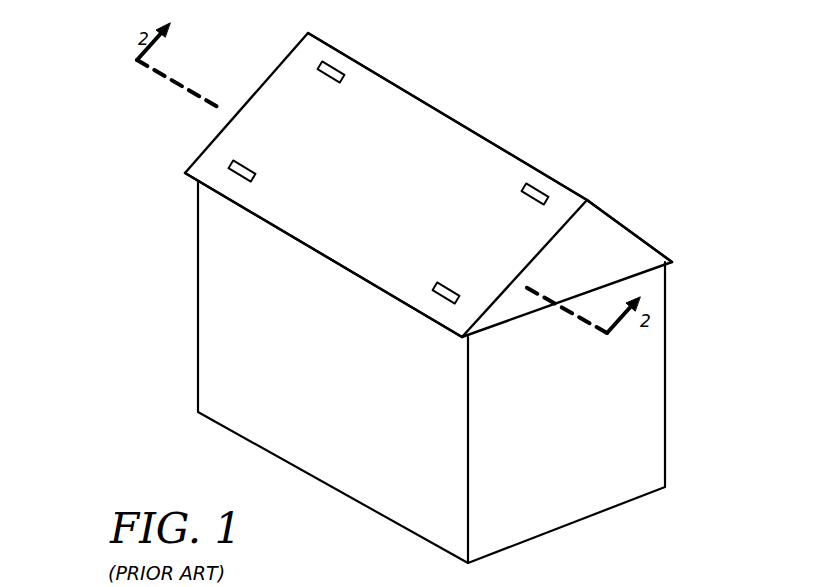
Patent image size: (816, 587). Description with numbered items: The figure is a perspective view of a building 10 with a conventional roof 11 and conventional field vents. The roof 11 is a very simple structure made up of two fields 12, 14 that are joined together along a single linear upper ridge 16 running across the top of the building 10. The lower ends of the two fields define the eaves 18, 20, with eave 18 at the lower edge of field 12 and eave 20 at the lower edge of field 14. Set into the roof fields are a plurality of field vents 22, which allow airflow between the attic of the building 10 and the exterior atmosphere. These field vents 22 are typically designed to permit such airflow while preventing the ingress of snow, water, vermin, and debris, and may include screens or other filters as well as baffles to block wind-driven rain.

The building 10 is at (118, 235).
The roof 11 is at (445, 181).
The field 12 is at (398, 170).
The field 14 is at (620, 220).
The upper ridge 16 is at (475, 128).
The eave 18 is at (365, 283).
The eave 20 is at (673, 262).
The field vents 22 is at (317, 65).